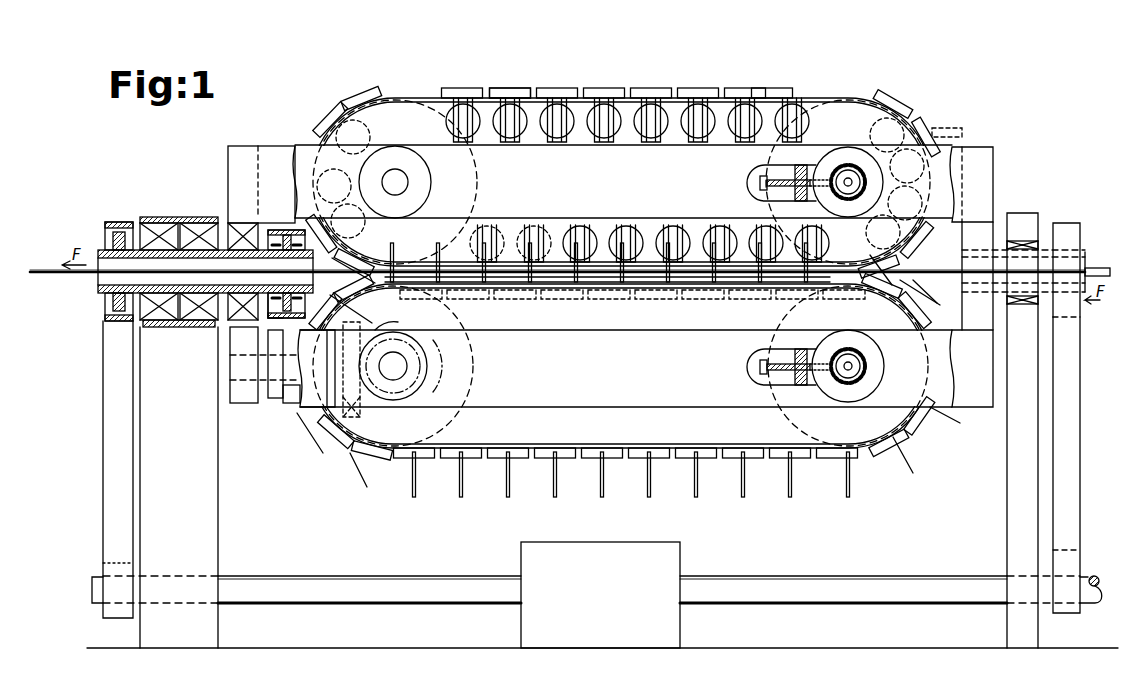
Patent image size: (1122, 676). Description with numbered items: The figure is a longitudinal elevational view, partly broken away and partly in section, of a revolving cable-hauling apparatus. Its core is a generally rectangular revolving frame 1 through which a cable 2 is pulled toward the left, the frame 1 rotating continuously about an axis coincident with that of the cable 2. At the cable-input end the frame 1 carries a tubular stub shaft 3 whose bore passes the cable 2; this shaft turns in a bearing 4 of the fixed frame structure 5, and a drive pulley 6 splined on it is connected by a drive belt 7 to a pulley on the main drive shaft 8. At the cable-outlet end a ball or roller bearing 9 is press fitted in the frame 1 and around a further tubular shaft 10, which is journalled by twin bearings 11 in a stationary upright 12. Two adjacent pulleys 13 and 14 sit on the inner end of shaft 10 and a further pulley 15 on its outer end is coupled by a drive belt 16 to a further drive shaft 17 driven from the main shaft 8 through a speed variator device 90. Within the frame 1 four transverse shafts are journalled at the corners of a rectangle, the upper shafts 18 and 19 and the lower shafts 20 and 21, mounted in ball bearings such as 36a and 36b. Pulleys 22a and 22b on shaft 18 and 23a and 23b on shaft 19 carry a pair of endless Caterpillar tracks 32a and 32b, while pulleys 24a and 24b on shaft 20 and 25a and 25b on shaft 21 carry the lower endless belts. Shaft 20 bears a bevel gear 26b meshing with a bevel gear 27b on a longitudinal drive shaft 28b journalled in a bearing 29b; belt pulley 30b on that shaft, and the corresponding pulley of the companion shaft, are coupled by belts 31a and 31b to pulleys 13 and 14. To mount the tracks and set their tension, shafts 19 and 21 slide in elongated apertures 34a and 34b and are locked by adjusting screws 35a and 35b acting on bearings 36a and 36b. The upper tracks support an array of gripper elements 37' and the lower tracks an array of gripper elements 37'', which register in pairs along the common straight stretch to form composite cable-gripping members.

The revolving frame 1 is at (243, 146).
The cable 2 is at (65, 277).
The tubular stub shaft 3 is at (1046, 290).
The bearing 4 is at (1035, 243).
The fixed frame structure 5 is at (1017, 473).
The drive pulley 6 is at (1078, 230).
The drive belt 7 is at (1081, 394).
The main drive shaft 8 is at (1090, 576).
The ball or roller bearing 9 is at (237, 228).
The tubular shaft 10 is at (222, 248).
The twin bearings 11 is at (170, 228).
The stationary frame member or upright 12 is at (208, 527).
The pulley 13 is at (303, 302).
The pulley 14 is at (274, 302).
The pulley 15 is at (118, 222).
The drive belt 16 is at (112, 399).
The drive shaft 17 is at (96, 598).
The upper shaft 18 is at (406, 183).
The upper shaft 19 is at (848, 182).
The lower shaft 20 is at (398, 372).
The lower shaft 21 is at (845, 375).
The pulley 22a is at (435, 128).
The pulley 22b is at (508, 100).
The pulley 23a is at (905, 130).
The pulley 23b is at (960, 130).
The pulley 24a is at (398, 440).
The pulley 24b is at (429, 445).
The pulley 25a is at (842, 442).
The pulley 25b is at (886, 450).
The bevel gear 26b is at (392, 322).
The bevel gear 27b is at (317, 412).
The longitudinal drive shaft 28b is at (232, 370).
The bearing 29b is at (243, 392).
The belt pulley 30b is at (272, 393).
The belt 31a is at (290, 228).
The belt 31b is at (277, 364).
The endless Caterpillar track 32a is at (716, 90).
The endless Caterpillar track 32b is at (745, 93).
The elongated aperture 34a is at (827, 198).
The elongated aperture 34b is at (771, 372).
The adjusting screw 35a is at (768, 190).
The adjusting screw 35b is at (773, 350).
The ball bearing 36a is at (848, 170).
The ball bearing 36b is at (868, 357).
The gripper element 37' is at (621, 102).
The gripper element 37'' is at (670, 483).
The speed variator device 90 is at (600, 595).